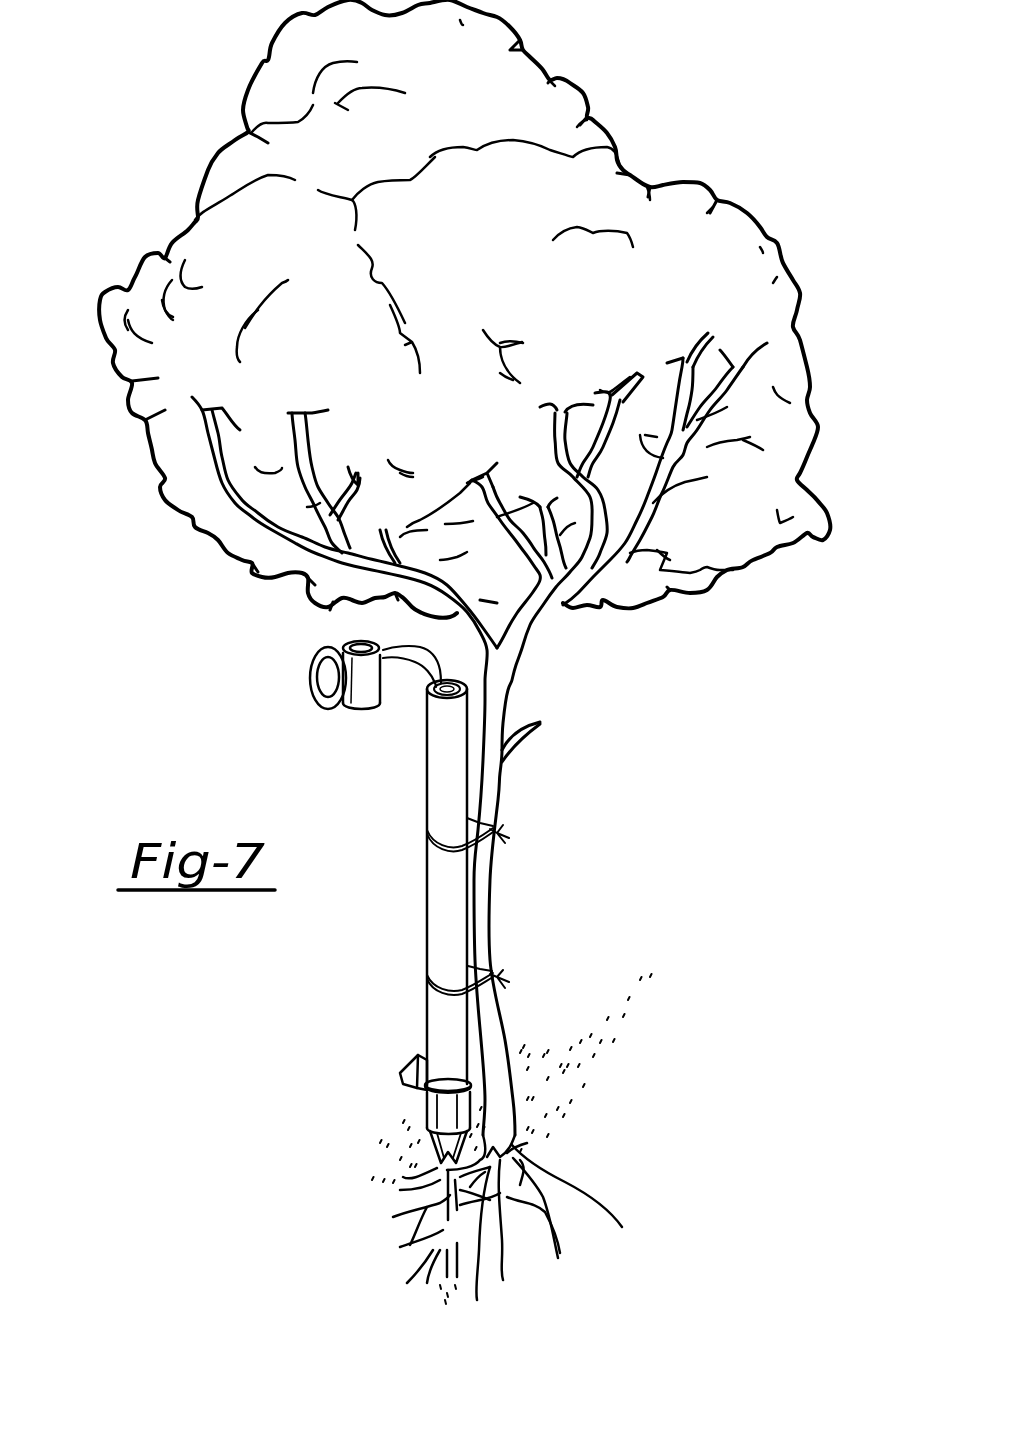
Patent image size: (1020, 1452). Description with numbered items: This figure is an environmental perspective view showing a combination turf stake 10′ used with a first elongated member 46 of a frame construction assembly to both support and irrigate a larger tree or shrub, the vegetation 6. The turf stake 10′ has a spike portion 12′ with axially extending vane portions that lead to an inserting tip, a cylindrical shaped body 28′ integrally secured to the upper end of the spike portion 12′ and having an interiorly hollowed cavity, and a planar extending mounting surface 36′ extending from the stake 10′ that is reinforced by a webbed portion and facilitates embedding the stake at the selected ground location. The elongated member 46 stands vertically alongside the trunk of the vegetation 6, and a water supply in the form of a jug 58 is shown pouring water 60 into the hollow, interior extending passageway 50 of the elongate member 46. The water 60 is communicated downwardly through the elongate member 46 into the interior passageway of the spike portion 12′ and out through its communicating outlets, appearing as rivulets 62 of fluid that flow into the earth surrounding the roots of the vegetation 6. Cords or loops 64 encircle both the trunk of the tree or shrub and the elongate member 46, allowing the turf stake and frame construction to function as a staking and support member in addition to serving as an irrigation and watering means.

The vegetation 6 is at (627, 202).
The turf stake 10′ is at (353, 1163).
The spike portion 12′ is at (437, 1210).
The cylindrical shaped body 28′ is at (430, 1113).
The planar extending mounting surface 36′ is at (420, 1068).
The first elongated member 46 is at (427, 885).
The interior extending passageway 50 is at (447, 701).
The jug 58 is at (340, 703).
The water 60 is at (433, 680).
The rivulets 62 is at (477, 1283).
The cords or loops 64 is at (495, 970).